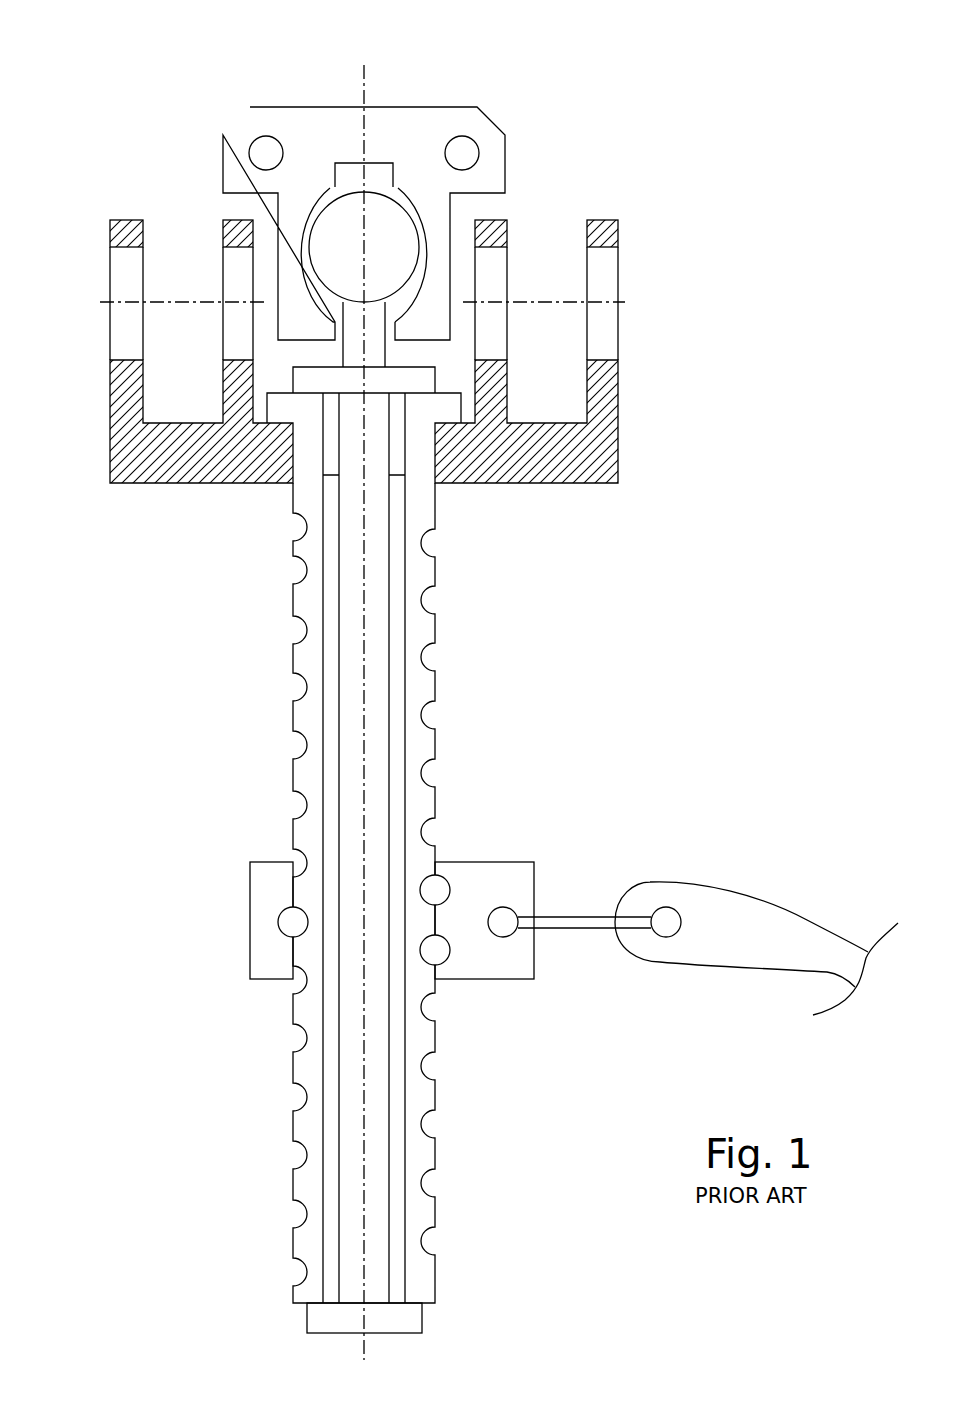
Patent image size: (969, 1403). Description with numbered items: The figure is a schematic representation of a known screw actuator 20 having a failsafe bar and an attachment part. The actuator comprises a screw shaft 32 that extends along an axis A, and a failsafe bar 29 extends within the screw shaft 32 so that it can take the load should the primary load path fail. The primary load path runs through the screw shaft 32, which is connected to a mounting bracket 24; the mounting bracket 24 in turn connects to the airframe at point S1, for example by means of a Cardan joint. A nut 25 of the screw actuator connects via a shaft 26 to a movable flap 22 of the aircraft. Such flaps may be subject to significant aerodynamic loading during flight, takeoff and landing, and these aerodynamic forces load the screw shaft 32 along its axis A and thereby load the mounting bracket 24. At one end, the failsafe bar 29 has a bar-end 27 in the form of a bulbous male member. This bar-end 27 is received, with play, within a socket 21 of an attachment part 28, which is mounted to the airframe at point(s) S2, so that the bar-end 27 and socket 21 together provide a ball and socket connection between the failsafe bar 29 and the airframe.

The screw actuator 20 is at (250, 928).
The socket 21 is at (330, 187).
The movable flap 22 is at (678, 880).
The mounting bracket 24 is at (110, 405).
The nut 25 is at (497, 862).
The shaft 26 is at (592, 915).
The bar-end 27 is at (327, 247).
The attachment part 28 is at (450, 107).
The failsafe bar 29 is at (345, 708).
The screw shaft 32 is at (422, 717).
The axis A is at (362, 694).
The airframe connection point S1 is at (177, 260).
The airframe mounting point S2 is at (472, 137).